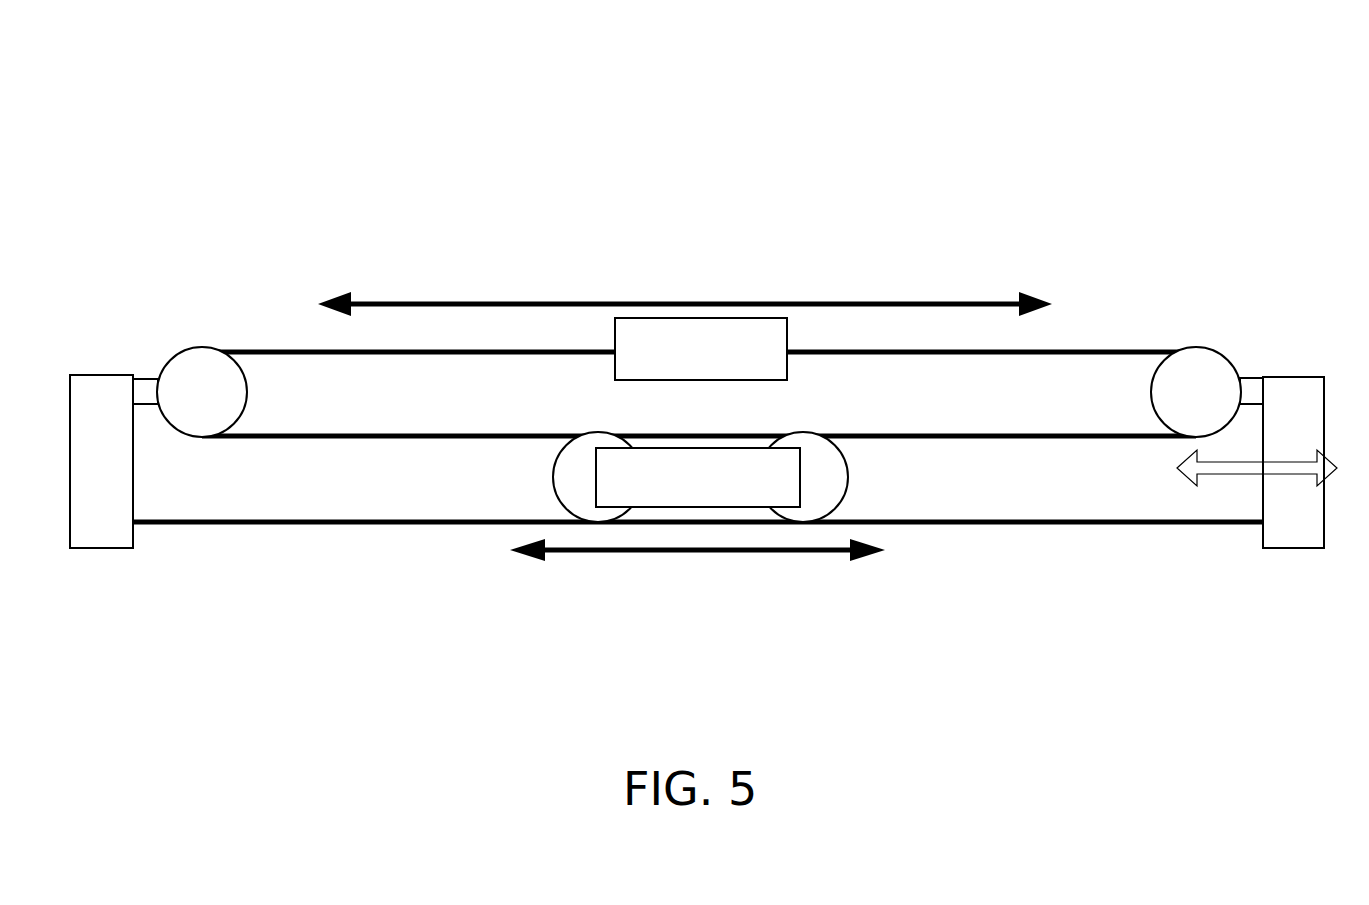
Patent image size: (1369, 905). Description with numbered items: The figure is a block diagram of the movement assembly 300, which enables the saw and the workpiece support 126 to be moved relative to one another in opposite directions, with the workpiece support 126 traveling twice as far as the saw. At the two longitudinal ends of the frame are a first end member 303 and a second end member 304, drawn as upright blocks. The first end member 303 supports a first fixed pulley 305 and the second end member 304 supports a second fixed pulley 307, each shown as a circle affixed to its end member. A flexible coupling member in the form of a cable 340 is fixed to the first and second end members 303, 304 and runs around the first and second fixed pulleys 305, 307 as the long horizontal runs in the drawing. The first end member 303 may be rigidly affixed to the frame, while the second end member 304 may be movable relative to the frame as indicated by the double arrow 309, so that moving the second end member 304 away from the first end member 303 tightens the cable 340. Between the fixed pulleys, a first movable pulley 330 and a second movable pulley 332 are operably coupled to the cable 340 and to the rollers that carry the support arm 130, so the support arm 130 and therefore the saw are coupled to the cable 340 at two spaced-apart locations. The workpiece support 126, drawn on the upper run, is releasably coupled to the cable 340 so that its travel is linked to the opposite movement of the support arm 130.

The movement assembly 300 is at (703, 348).
The workpiece support 126 is at (657, 307).
The support arm 130 is at (698, 458).
The first end member 303 is at (114, 505).
The second end member 304 is at (1251, 506).
The first fixed pulley 305 is at (178, 358).
The second fixed pulley 307 is at (1244, 354).
The double arrow 309 is at (1236, 483).
The first movable pulley 330 is at (530, 477).
The second movable pulley 332 is at (847, 477).
The cable 340 is at (698, 551).